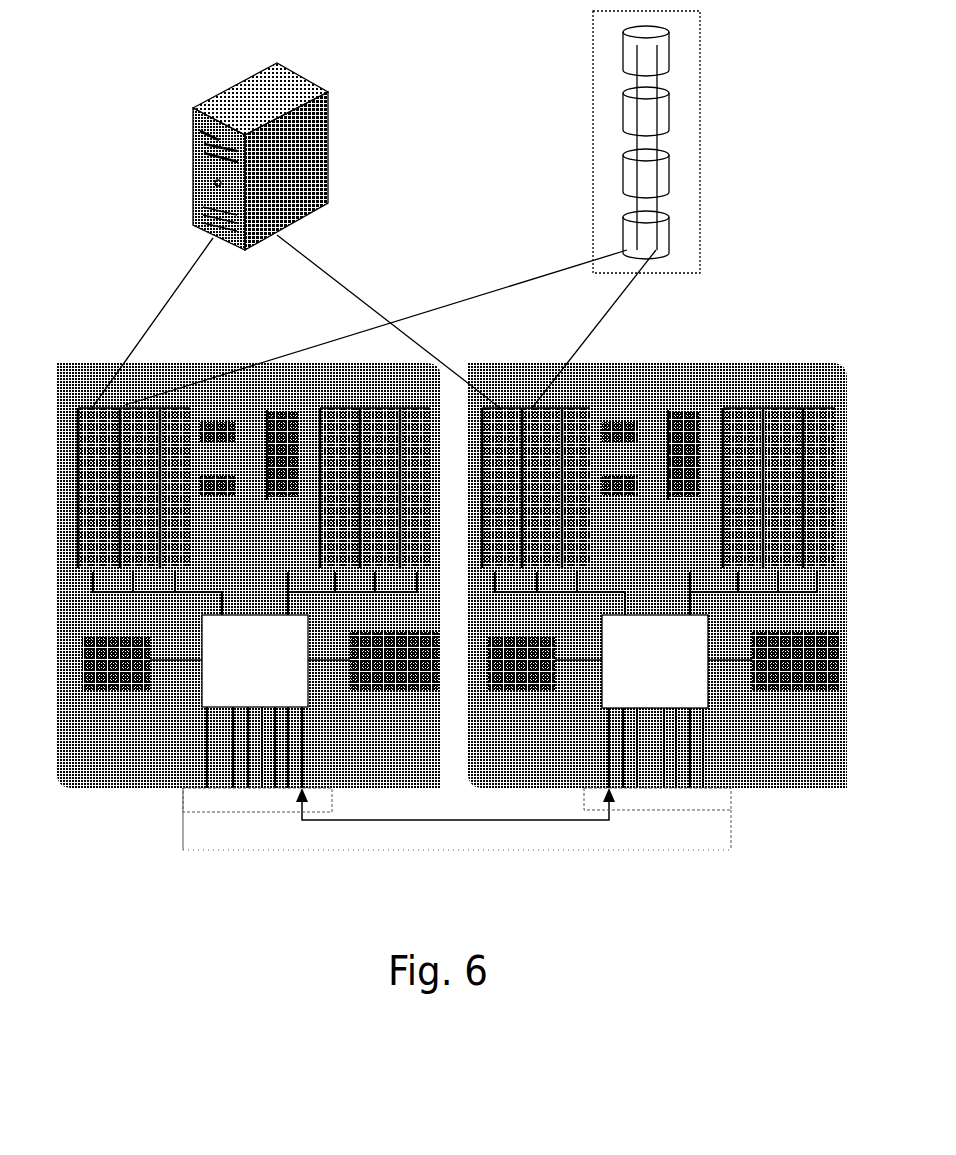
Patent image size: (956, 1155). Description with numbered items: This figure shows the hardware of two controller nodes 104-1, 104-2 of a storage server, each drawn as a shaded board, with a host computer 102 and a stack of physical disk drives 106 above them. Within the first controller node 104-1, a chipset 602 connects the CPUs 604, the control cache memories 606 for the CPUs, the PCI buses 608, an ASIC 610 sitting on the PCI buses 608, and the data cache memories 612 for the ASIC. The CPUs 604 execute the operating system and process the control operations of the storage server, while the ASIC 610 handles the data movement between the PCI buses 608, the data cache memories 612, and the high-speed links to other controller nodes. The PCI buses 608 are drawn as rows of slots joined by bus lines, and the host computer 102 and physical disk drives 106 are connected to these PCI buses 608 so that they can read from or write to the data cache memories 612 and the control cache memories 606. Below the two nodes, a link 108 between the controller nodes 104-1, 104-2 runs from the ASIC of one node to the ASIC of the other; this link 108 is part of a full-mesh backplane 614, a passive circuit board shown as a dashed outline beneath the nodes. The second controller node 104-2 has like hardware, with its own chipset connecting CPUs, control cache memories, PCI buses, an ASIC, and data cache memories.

The host computer 102 is at (320, 78).
The physical disk drives 106 is at (702, 142).
The controller node 104-1 is at (249, 596).
The controller node 104-2 is at (762, 788).
The chipset 602 is at (228, 560).
The CPUs 604 is at (232, 420).
The control cache memories 606 is at (284, 416).
The PCI buses 608 is at (150, 593).
The ASIC 610 is at (308, 698).
The data cache memories 612 is at (110, 687).
The link 108 is at (548, 822).
The full-mesh backplane 614 is at (700, 850).